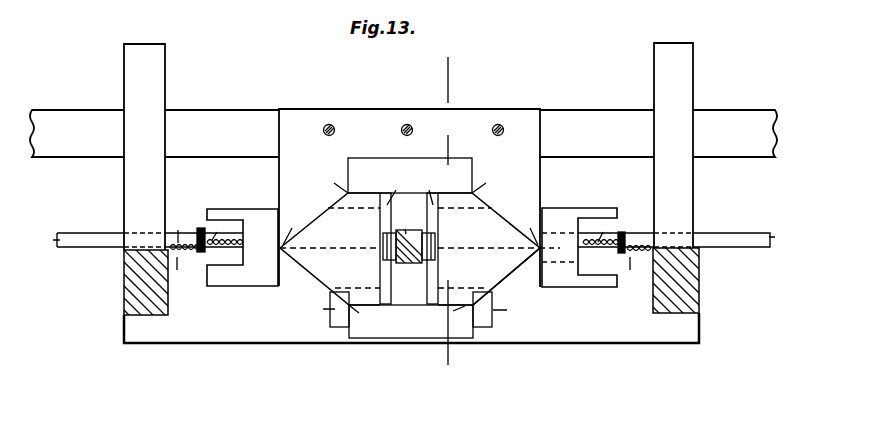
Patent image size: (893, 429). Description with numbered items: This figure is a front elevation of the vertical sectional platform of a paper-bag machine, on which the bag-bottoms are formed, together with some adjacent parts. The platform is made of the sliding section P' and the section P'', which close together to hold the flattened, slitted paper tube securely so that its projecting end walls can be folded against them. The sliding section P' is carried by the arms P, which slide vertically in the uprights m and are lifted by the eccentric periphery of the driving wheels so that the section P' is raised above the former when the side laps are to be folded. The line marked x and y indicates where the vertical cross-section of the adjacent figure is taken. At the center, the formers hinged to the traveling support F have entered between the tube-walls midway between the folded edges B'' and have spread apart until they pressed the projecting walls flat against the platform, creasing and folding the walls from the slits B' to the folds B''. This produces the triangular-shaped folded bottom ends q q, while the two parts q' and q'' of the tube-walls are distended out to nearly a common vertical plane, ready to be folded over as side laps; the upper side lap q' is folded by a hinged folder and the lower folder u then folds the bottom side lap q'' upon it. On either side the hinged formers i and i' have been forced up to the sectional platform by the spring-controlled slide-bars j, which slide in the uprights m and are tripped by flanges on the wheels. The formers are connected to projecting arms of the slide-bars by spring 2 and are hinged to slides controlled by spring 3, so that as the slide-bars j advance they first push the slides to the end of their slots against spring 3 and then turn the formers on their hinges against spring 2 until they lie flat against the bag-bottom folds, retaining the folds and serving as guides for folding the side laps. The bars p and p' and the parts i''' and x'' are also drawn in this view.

The arms P is at (403, 133).
The sliding section of the sectional platform P' is at (409, 198).
The section of the sectional platform P'' is at (506, 276).
The uprights m is at (673, 145).
The section line x is at (456, 110).
The section line y is at (457, 337).
The triangular-shaped folded bottom ends q is at (410, 249).
The side lap q' is at (410, 175).
The bottom side lap q'' is at (411, 321).
The slits B' is at (403, 251).
The folded edges B'' is at (410, 225).
The bar p is at (430, 241).
The bar p' is at (393, 241).
The traveling support F is at (405, 246).
The lower folder u is at (413, 309).
The hinged former i is at (578, 247).
The hinged former i' is at (242, 247).
The spring i''' is at (413, 253).
The slide-bars j is at (412, 236).
The spring 2 is at (411, 235).
The spring 3 is at (185, 233).
The spring / collar x'' is at (411, 265).